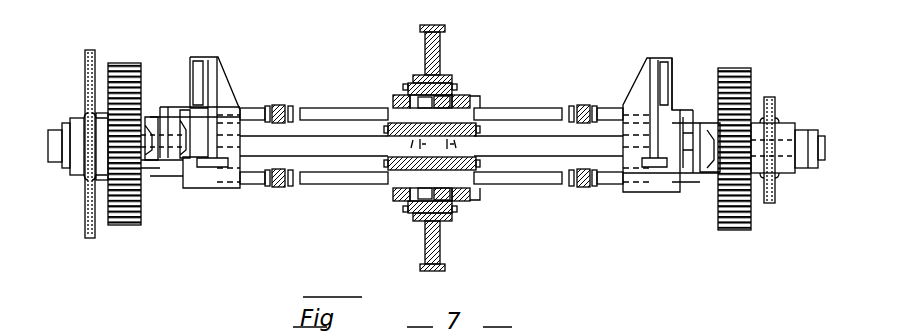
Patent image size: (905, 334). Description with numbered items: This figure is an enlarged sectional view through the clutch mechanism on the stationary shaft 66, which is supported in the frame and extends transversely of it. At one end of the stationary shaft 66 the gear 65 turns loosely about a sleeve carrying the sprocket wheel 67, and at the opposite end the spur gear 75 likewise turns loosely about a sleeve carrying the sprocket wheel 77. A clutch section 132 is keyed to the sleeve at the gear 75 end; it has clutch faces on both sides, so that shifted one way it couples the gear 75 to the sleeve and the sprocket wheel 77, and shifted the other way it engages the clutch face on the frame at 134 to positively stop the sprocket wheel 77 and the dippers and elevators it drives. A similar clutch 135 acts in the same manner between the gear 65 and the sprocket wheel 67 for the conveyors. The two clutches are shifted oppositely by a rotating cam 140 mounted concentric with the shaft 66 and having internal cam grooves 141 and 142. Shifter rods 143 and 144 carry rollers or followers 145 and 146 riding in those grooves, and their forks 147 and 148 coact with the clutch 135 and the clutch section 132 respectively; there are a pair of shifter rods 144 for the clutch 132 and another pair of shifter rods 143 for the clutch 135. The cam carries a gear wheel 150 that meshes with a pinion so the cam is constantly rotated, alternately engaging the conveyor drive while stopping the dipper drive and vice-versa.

The gear 65 is at (733, 237).
The stationary shaft 66 is at (602, 150).
The sprocket wheel 67 is at (776, 108).
The spur gear 75 is at (124, 230).
The sprocket wheel 77 is at (84, 86).
The clutch section 132 is at (173, 163).
The clutch face on frame 134 is at (187, 120).
The clutch 135 is at (700, 108).
The rotating cam 140 is at (463, 93).
The internal cam groove 141 is at (473, 112).
The internal cam groove 142 is at (407, 192).
The shifter rod 143 is at (515, 180).
The shifter rod 144 is at (310, 153).
The roller or follower 145 is at (458, 97).
The roller or follower 146 is at (397, 97).
The fork 147 is at (683, 192).
The fork 148 is at (160, 118).
The gear wheel 150 is at (419, 262).